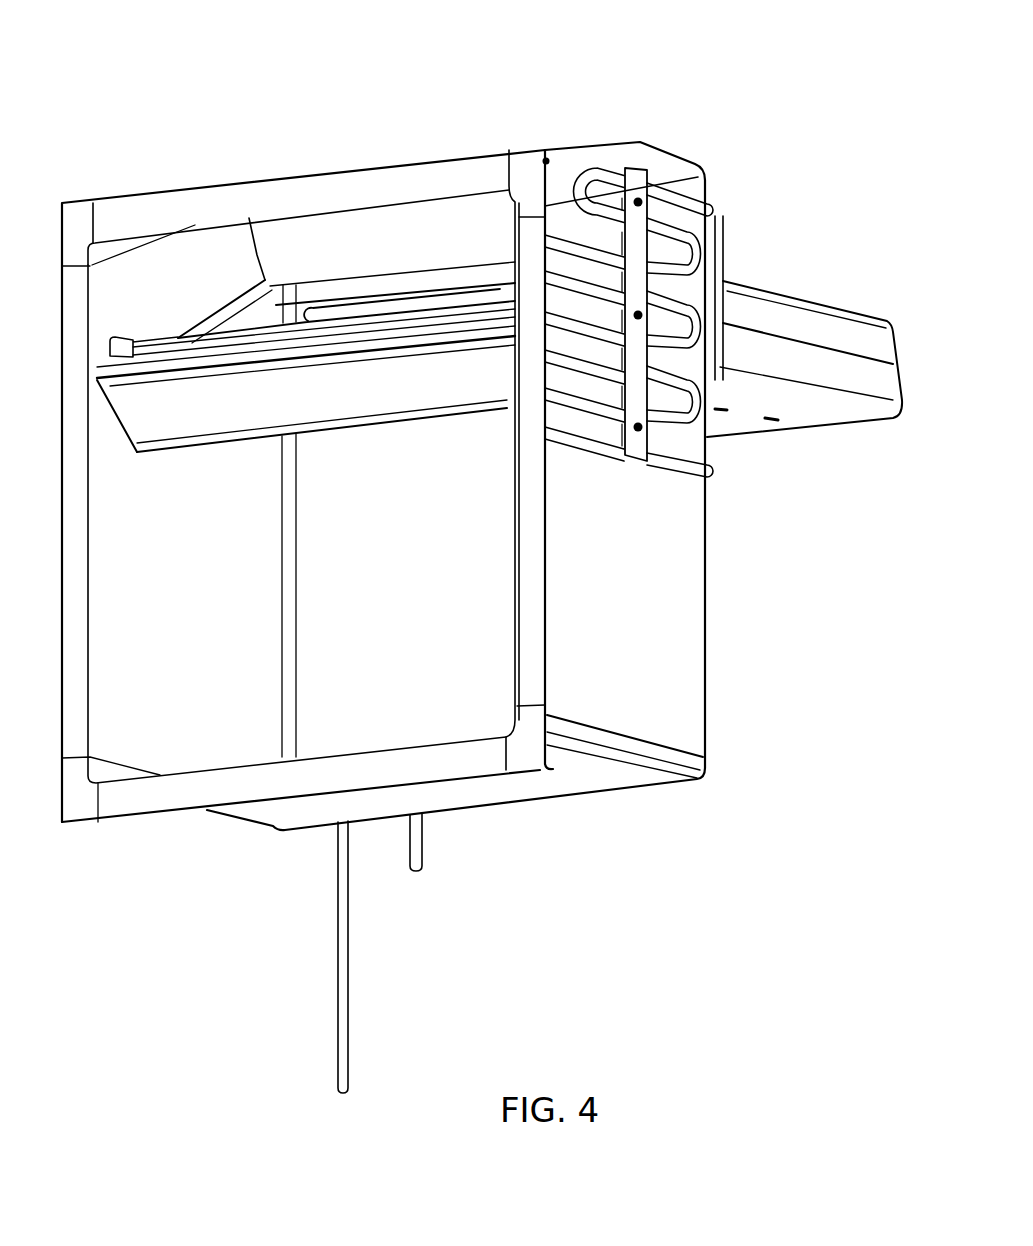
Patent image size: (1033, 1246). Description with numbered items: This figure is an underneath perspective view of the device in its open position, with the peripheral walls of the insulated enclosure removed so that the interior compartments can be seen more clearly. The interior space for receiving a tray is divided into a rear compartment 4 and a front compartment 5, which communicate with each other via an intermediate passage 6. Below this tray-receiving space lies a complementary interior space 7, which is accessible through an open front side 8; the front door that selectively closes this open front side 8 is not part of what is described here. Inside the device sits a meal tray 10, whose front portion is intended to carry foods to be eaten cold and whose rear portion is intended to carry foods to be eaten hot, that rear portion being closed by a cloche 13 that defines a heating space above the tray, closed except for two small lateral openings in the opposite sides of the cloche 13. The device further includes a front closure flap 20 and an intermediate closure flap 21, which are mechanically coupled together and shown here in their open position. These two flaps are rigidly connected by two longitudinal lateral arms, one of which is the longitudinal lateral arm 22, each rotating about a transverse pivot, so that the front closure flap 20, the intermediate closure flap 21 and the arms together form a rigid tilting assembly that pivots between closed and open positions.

The rear compartment 4 is at (807, 303).
The front compartment 5 is at (566, 148).
The intermediate passage 6 is at (373, 290).
The complementary interior space 7 is at (198, 727).
The open front side 8 is at (482, 687).
The meal tray 10 is at (157, 345).
The cloche 13 is at (420, 300).
The front closure flap 20 is at (402, 382).
The intermediate closure flap 21 is at (340, 232).
The longitudinal lateral arm 22 is at (213, 320).